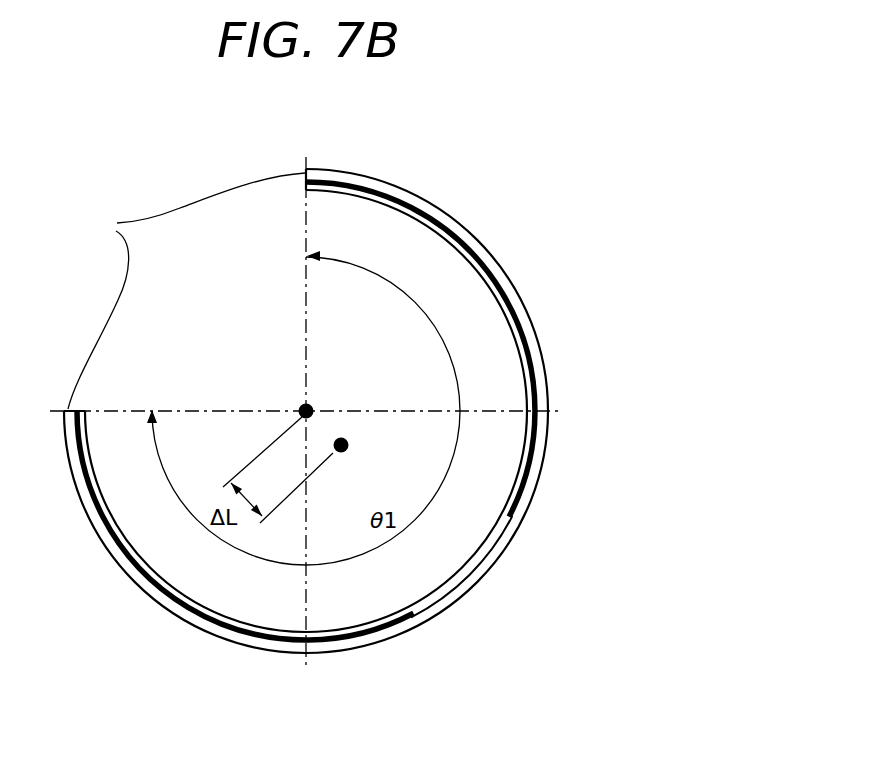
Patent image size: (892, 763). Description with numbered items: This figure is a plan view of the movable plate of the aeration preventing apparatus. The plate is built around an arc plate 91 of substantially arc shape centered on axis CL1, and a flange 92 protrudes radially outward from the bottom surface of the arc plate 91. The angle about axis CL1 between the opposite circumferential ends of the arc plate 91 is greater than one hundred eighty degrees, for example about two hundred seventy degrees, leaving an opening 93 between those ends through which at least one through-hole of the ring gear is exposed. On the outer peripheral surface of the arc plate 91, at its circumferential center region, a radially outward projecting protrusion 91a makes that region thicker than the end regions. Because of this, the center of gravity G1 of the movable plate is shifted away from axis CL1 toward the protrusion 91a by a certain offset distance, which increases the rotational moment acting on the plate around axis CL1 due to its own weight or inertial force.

The arc plate 91 is at (535, 453).
The protrusion 91a is at (490, 562).
The flange 92 is at (527, 322).
The opening 93 is at (186, 291).
The axis CL1 is at (327, 401).
The center of gravity G1 is at (360, 457).